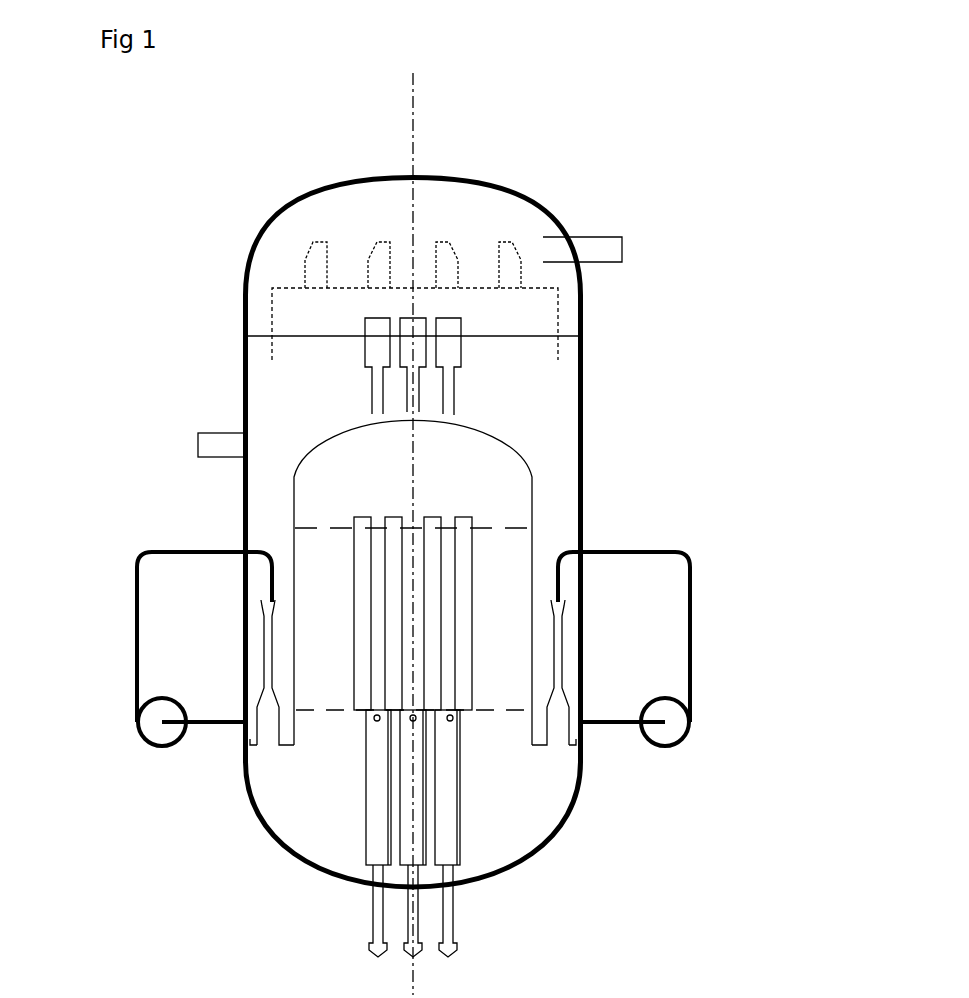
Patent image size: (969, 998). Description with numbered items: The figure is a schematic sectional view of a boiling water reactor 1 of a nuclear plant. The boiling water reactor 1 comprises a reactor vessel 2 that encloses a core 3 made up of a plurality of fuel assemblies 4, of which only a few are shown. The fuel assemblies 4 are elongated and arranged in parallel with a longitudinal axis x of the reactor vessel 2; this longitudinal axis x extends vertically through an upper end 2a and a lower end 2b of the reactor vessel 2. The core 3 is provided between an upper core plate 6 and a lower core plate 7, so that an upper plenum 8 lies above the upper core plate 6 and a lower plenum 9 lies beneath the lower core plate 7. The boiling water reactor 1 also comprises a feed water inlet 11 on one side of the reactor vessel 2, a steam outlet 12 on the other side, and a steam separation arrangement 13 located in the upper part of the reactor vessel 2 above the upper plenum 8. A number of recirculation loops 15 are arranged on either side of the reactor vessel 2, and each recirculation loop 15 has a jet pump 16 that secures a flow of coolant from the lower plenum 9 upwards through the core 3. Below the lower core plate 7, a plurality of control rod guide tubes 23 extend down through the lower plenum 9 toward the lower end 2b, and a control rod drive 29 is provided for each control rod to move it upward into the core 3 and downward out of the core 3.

The boiling water reactor 1 is at (205, 225).
The reactor vessel 2 is at (243, 292).
The upper end 2a is at (466, 164).
The lower end 2b is at (503, 892).
The core 3 is at (316, 558).
The fuel assemblies 4 is at (435, 533).
The upper core plate 6 is at (336, 528).
The lower core plate 7 is at (350, 712).
The upper plenum 8 is at (372, 484).
The lower plenum 9 is at (504, 770).
The feed water inlet 11 is at (198, 445).
The steam outlet 12 is at (610, 245).
The steam separation arrangement 13 is at (244, 343).
The recirculation loops 15 is at (137, 580).
The jet pump 16 is at (267, 652).
The control rod guide tubes 23 is at (452, 812).
The control rod drive 29 is at (452, 928).
The longitudinal axis x is at (413, 101).